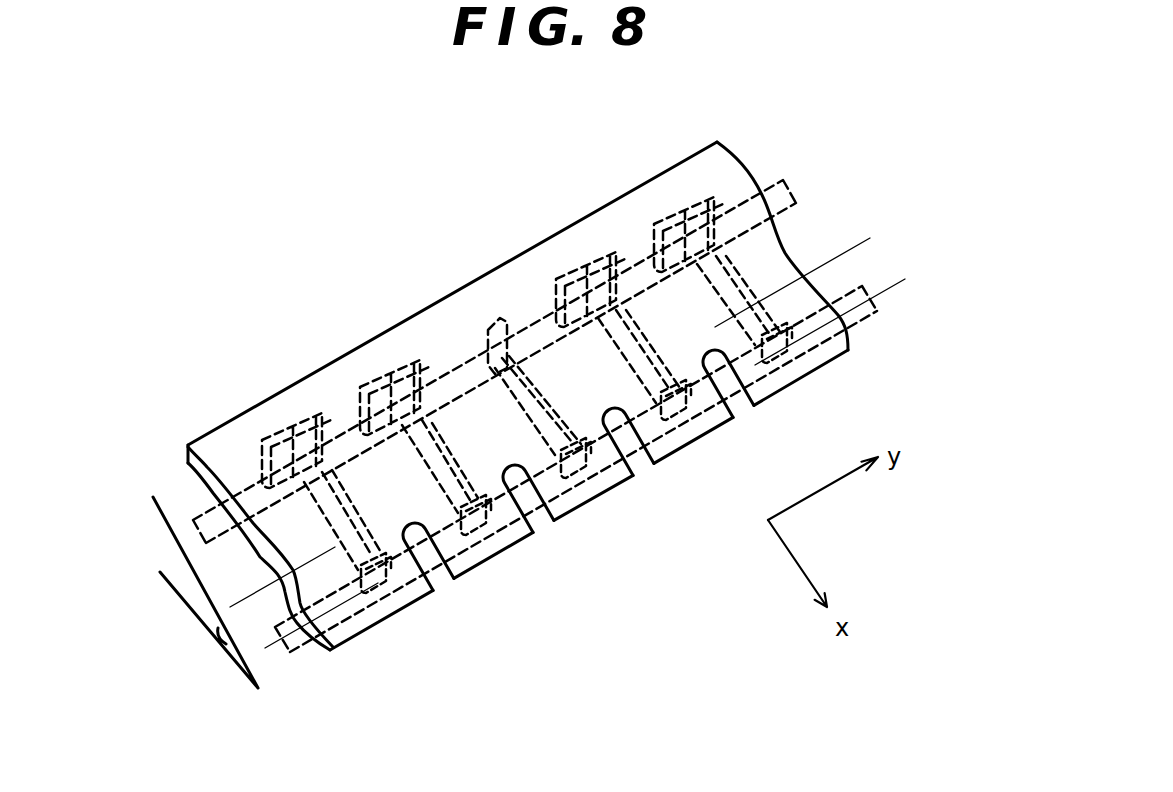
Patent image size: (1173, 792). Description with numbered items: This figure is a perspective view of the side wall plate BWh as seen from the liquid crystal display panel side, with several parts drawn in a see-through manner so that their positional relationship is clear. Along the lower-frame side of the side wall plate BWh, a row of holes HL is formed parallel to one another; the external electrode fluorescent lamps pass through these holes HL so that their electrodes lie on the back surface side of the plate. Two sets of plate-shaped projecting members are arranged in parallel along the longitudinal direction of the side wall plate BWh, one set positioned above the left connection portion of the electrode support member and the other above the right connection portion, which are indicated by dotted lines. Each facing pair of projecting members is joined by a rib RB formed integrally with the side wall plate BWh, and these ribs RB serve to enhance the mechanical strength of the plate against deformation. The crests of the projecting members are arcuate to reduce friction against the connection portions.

The side wall plate BWh is at (493, 295).
The rib RB is at (633, 330).
The hole HL is at (743, 407).